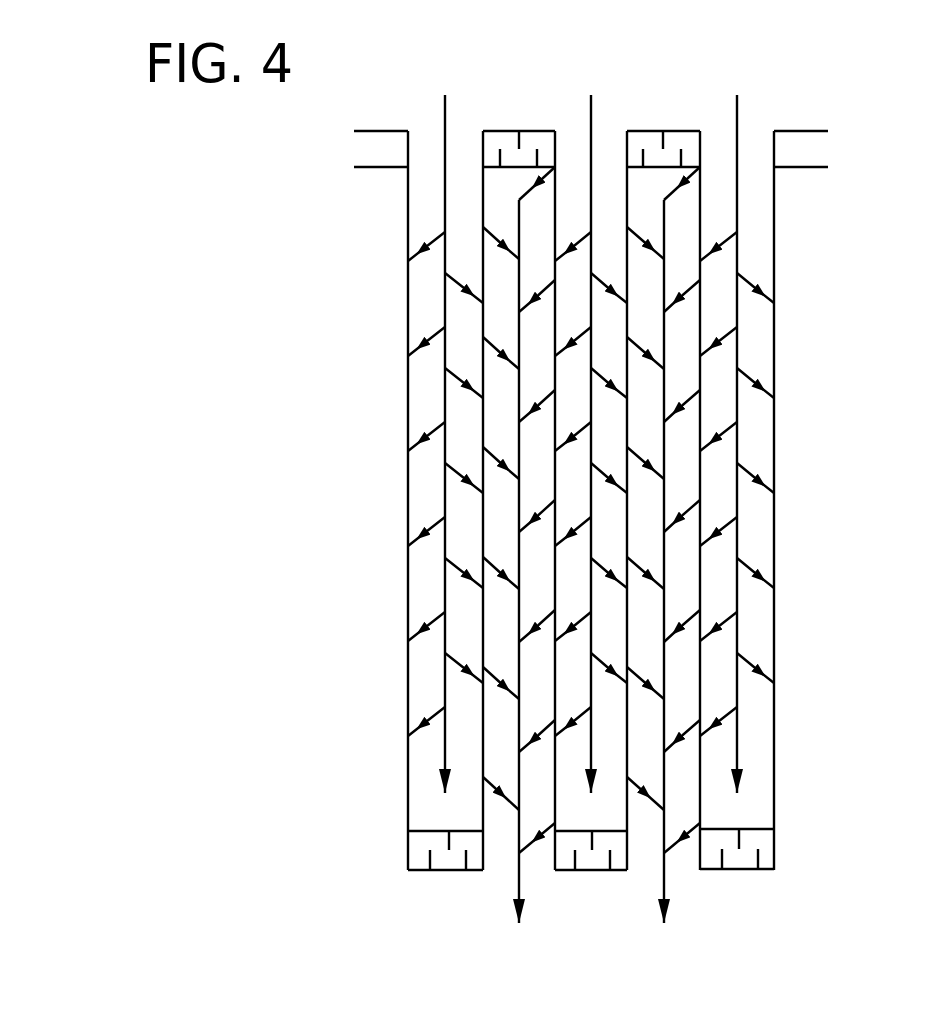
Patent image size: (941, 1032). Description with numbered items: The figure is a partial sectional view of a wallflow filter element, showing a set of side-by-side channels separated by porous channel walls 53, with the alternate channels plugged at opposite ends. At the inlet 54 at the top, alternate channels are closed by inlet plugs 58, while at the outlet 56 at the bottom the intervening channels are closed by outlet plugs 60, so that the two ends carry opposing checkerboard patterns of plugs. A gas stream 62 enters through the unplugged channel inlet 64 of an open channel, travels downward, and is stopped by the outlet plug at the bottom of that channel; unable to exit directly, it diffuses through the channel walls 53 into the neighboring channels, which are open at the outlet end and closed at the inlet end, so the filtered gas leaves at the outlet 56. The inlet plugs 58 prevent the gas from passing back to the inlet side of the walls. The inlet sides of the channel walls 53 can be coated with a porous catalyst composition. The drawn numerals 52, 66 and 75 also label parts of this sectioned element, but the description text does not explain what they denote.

The first fluid passages (plates) 52 is at (452, 180).
The channel walls 53 is at (560, 463).
The inlet 54 is at (820, 108).
The outlet 56 is at (776, 882).
The inlet plugs 58 is at (372, 139).
The outlet plugs 60 is at (446, 871).
The gas stream 62 is at (591, 98).
The unplugged channel inlet 64 is at (476, 165).
The outlet manifold 66 is at (487, 857).
The fin 75 is at (412, 483).